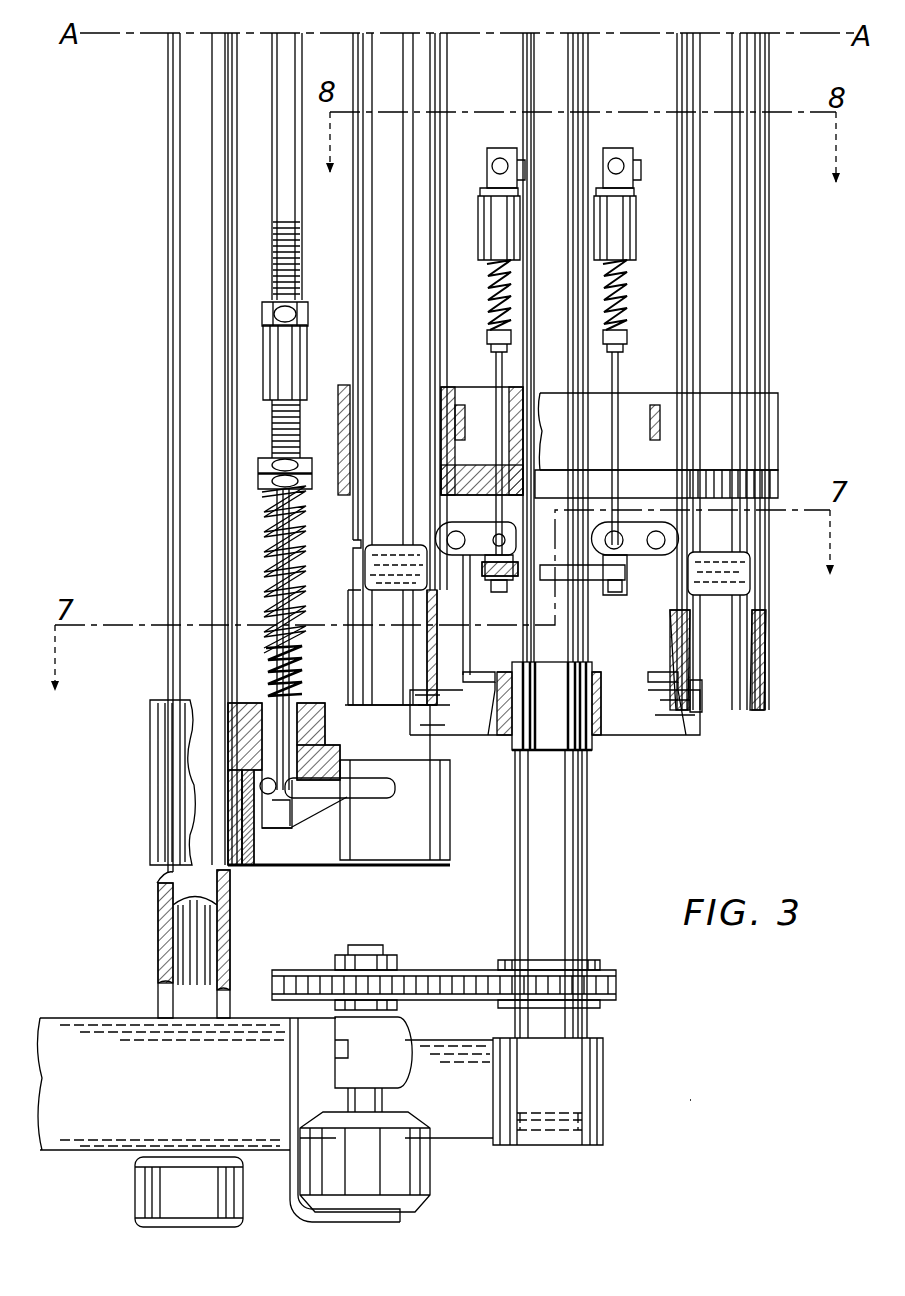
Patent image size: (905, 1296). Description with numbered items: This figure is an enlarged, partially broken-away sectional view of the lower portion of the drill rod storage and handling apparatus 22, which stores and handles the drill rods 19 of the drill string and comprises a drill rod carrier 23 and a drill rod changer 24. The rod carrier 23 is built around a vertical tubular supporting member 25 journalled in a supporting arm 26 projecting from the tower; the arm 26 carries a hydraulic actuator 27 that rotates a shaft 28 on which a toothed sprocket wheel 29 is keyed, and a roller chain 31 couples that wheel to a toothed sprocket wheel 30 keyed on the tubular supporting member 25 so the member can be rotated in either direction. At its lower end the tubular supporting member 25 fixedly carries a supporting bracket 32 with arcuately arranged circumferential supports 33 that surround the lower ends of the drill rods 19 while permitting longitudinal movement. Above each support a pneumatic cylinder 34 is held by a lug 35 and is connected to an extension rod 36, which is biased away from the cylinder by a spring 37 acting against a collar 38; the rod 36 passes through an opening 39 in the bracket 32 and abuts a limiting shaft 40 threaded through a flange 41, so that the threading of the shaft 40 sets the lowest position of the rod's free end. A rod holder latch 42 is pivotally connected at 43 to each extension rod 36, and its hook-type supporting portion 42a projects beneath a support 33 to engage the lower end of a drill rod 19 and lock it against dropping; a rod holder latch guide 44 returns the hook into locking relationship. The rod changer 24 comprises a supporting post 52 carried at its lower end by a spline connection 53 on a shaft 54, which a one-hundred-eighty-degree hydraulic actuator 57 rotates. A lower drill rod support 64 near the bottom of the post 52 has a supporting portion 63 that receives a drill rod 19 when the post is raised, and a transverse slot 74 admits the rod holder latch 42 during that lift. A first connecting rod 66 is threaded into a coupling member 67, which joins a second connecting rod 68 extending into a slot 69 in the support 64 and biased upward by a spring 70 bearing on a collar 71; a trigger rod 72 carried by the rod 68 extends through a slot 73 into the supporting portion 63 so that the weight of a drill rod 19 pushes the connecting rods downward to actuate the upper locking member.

The drill rod 19 is at (410, 222).
The drill rod storage and handling apparatus 22 is at (695, 1101).
The drill rod carrier 23 is at (634, 71).
The drill rod changer 24 is at (195, 245).
The tubular supporting member 25 is at (572, 254).
The supporting arm 26 is at (120, 1090).
The hydraulic actuator 27 is at (405, 1165).
The shaft 28 is at (365, 1100).
The toothed sprocket wheel 29 is at (282, 985).
The toothed sprocket wheel 30 is at (616, 985).
The roller chain 31 is at (443, 970).
The supporting bracket 32 is at (635, 418).
The circumferential support 33 is at (345, 418).
The pneumatic cylinder 34 is at (496, 214).
The lug 35 is at (500, 150).
The extension rod 36 is at (497, 368).
The spring 37 is at (490, 286).
The collar 38 is at (488, 342).
The opening 39 is at (496, 512).
The limiting shaft 40 is at (610, 585).
The flange 41 is at (607, 595).
The rod holder latch 42 is at (455, 656).
The hook-type supporting portion 42a is at (422, 728).
The pivotal connection 43 is at (625, 522).
The rod holder latch guide 44 is at (497, 718).
The supporting post 52 is at (185, 438).
The spline connection 53 is at (185, 895).
The shaft 54 is at (192, 935).
The hydraulic actuator 57 is at (178, 1192).
The supporting portion 63 is at (388, 850).
The lower drill rod support 64 is at (172, 762).
The first connecting rod 66 is at (300, 200).
The coupling member 67 is at (280, 380).
The second connecting rod 68 is at (285, 560).
The slot 69 is at (262, 700).
The spring 70 is at (282, 520).
The collar 71 is at (270, 462).
The trigger rod 72 is at (395, 803).
The slot 73 is at (314, 832).
The transverse slot 74 is at (446, 836).